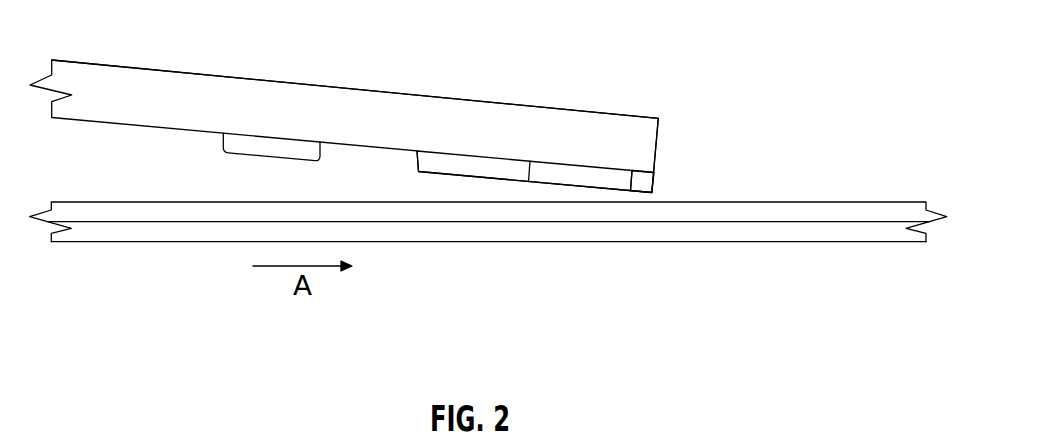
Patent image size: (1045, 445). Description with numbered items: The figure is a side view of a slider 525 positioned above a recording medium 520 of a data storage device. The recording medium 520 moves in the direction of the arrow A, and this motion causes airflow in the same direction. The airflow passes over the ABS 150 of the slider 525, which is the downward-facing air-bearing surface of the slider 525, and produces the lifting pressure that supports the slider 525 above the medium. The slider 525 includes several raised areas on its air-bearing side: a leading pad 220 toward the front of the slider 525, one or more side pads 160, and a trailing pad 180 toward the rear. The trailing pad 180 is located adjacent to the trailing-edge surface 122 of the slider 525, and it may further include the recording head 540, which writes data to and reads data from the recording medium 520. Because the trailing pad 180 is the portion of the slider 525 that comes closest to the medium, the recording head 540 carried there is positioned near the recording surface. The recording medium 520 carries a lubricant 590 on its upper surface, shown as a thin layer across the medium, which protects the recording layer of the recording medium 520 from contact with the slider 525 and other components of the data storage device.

The ABS 150 is at (110, 140).
The slider 525 is at (342, 93).
The trailing-edge surface 122 is at (675, 135).
The leading pad 220 is at (248, 153).
The side pad 160 is at (418, 171).
The trailing pad 180 is at (567, 179).
The recording head 540 is at (650, 170).
The lubricant 590 is at (859, 202).
The recording medium 520 is at (150, 243).